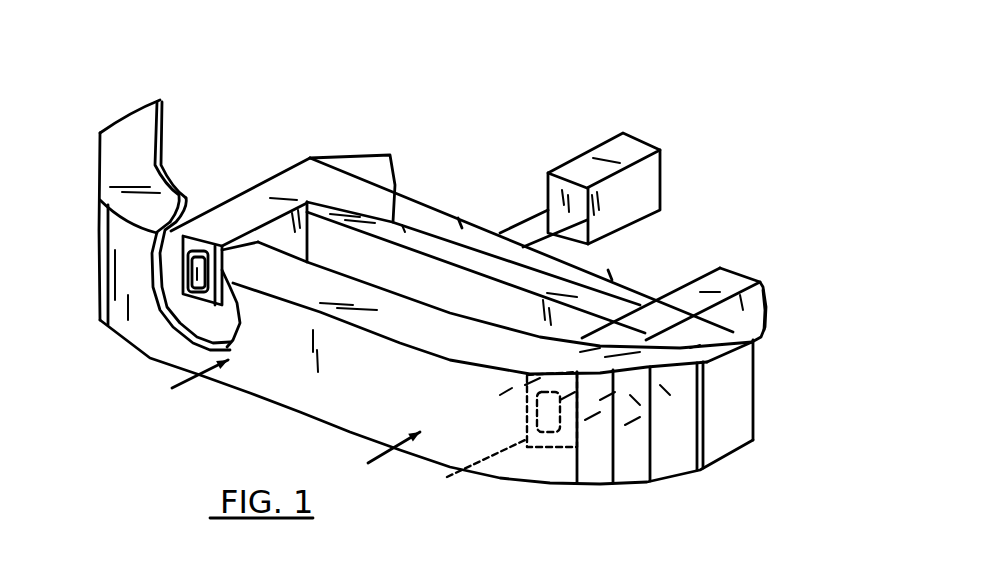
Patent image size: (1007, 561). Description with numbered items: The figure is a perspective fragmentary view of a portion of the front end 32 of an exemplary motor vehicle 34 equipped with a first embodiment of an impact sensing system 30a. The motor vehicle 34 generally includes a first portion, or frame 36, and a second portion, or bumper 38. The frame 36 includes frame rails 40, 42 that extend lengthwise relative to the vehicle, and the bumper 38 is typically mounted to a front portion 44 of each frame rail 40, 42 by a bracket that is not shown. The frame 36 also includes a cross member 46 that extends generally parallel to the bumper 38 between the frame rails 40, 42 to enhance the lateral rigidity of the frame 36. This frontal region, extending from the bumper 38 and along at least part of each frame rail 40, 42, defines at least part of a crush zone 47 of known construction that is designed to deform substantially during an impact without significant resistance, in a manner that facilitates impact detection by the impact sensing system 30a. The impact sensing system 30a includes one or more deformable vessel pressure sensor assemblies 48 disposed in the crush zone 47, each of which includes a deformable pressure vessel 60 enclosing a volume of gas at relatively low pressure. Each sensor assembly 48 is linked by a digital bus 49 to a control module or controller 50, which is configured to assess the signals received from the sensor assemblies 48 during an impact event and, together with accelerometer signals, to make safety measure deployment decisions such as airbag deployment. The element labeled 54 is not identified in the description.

The impact sensing system 30a is at (520, 198).
The front end 32 is at (728, 466).
The motor vehicle 34 is at (630, 492).
The frame 36 is at (355, 150).
The bumper 38 is at (320, 397).
The frame rail 40 is at (295, 186).
The frame rail 42 is at (730, 278).
The front portion 44 is at (212, 200).
The cross member 46 is at (403, 227).
The crush zone 47 is at (773, 318).
The deformable vessel pressure sensor assembly 48 is at (183, 303).
The digital bus 49 is at (460, 220).
The controller 50 is at (607, 154).
The end flange 54 is at (172, 158).
The deformable pressure vessel 60 is at (188, 282).